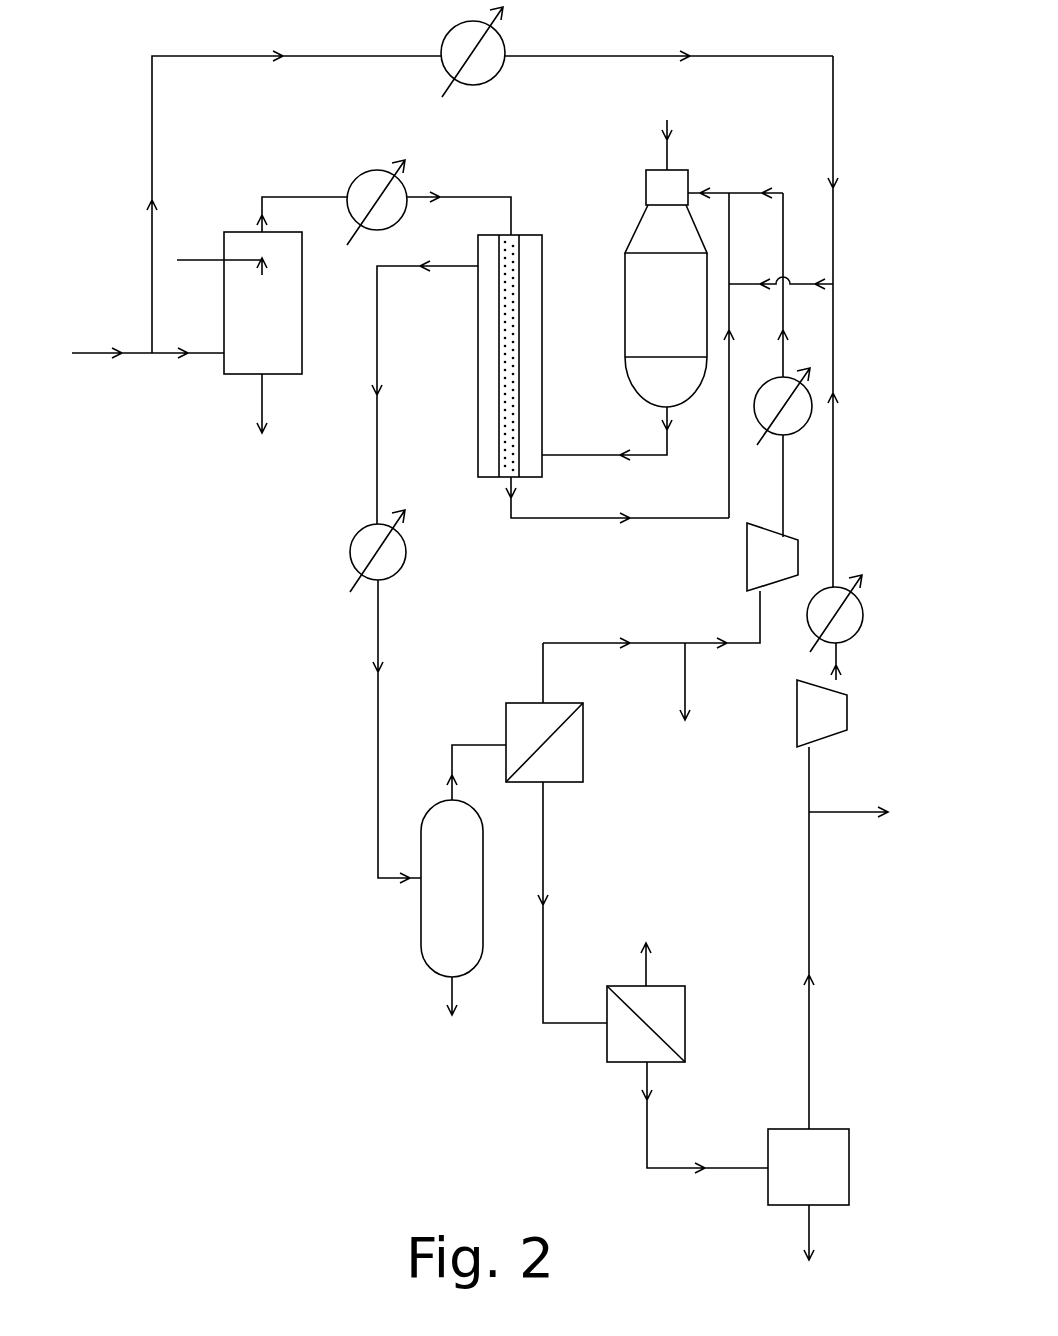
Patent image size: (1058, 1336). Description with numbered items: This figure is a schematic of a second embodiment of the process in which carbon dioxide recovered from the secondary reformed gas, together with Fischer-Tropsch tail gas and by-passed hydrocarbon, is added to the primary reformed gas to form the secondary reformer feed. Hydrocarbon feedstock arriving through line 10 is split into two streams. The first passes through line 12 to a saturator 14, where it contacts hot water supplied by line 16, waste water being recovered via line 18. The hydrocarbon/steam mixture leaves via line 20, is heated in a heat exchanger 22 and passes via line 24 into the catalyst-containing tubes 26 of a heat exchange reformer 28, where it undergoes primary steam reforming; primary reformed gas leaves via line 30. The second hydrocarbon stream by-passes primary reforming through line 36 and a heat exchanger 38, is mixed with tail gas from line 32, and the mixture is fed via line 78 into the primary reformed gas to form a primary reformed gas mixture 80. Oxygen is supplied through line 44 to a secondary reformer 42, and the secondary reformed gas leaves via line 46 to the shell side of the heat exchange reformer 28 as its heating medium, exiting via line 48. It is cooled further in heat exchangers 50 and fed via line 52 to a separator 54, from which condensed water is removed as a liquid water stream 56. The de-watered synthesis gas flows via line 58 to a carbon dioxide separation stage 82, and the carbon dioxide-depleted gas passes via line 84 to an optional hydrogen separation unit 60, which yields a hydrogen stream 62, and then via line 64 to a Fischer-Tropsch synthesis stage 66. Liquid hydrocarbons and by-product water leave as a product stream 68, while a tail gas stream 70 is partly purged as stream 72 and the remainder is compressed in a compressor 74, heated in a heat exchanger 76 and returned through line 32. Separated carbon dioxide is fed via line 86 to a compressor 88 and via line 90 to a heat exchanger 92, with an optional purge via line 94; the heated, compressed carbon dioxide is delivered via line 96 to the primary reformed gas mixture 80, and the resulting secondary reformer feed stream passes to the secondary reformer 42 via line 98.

The line 10 is at (100, 350).
The line 12 is at (205, 350).
The saturator 14 is at (302, 265).
The line 16 is at (205, 258).
The line 18 is at (262, 393).
The line 20 is at (300, 197).
The heat exchanger 22 is at (410, 178).
The line 24 is at (490, 197).
The catalyst-containing tubes 26 is at (507, 332).
The heat exchange reformer 28 is at (480, 380).
The line 30 is at (508, 515).
The line 32 is at (838, 450).
The line 36 is at (365, 57).
The heat exchanger 38 is at (490, 72).
The secondary reformer 42 is at (625, 278).
The line 44 is at (668, 153).
The line 46 is at (643, 452).
The line 48 is at (412, 267).
The heat exchangers 50 is at (392, 557).
The line 52 is at (380, 707).
The separator 54 is at (483, 858).
The liquid water stream 56 is at (450, 995).
The line 58 is at (480, 745).
The hydrogen separation unit 60 is at (635, 1065).
The hydrogen stream 62 is at (645, 972).
The line 64 is at (645, 1145).
The Fischer-Tropsch synthesis stage 66 is at (790, 1128).
The product stream 68 is at (808, 1220).
The tail gas stream 70 is at (808, 855).
The purge stream 72 is at (850, 810).
The compressor 74 is at (848, 710).
The heat exchanger 76 is at (845, 590).
The line 78 is at (830, 283).
The primary reformed gas mixture 80 is at (730, 255).
The carbon dioxide separation stage 82 is at (585, 720).
The line 84 is at (545, 860).
The line 86 is at (598, 640).
The compressor 88 is at (747, 572).
The line 90 is at (785, 495).
The heat exchanger 92 is at (790, 382).
The line 94 is at (692, 677).
The line 96 is at (782, 190).
The line 98 is at (700, 190).